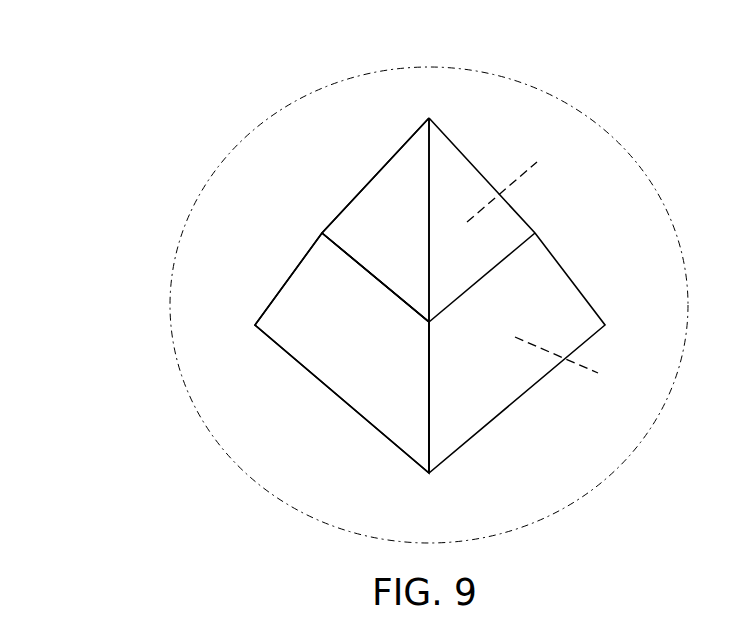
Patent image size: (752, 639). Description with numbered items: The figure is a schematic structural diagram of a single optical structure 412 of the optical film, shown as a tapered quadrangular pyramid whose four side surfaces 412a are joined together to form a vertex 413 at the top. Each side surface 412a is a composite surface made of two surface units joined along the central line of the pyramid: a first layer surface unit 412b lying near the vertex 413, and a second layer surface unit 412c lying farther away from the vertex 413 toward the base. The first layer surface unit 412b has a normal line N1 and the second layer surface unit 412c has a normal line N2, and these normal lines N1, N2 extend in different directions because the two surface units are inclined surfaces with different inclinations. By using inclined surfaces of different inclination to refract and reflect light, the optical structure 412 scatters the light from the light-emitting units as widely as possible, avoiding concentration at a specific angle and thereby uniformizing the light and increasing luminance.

The optical structure 412 is at (570, 198).
The side surface 412a is at (106, 67).
The first layer surface unit 412b is at (380, 217).
The second layer surface unit 412c is at (307, 288).
The vertex 413 is at (429, 118).
The normal line N1 is at (520, 175).
The normal line N2 is at (548, 352).